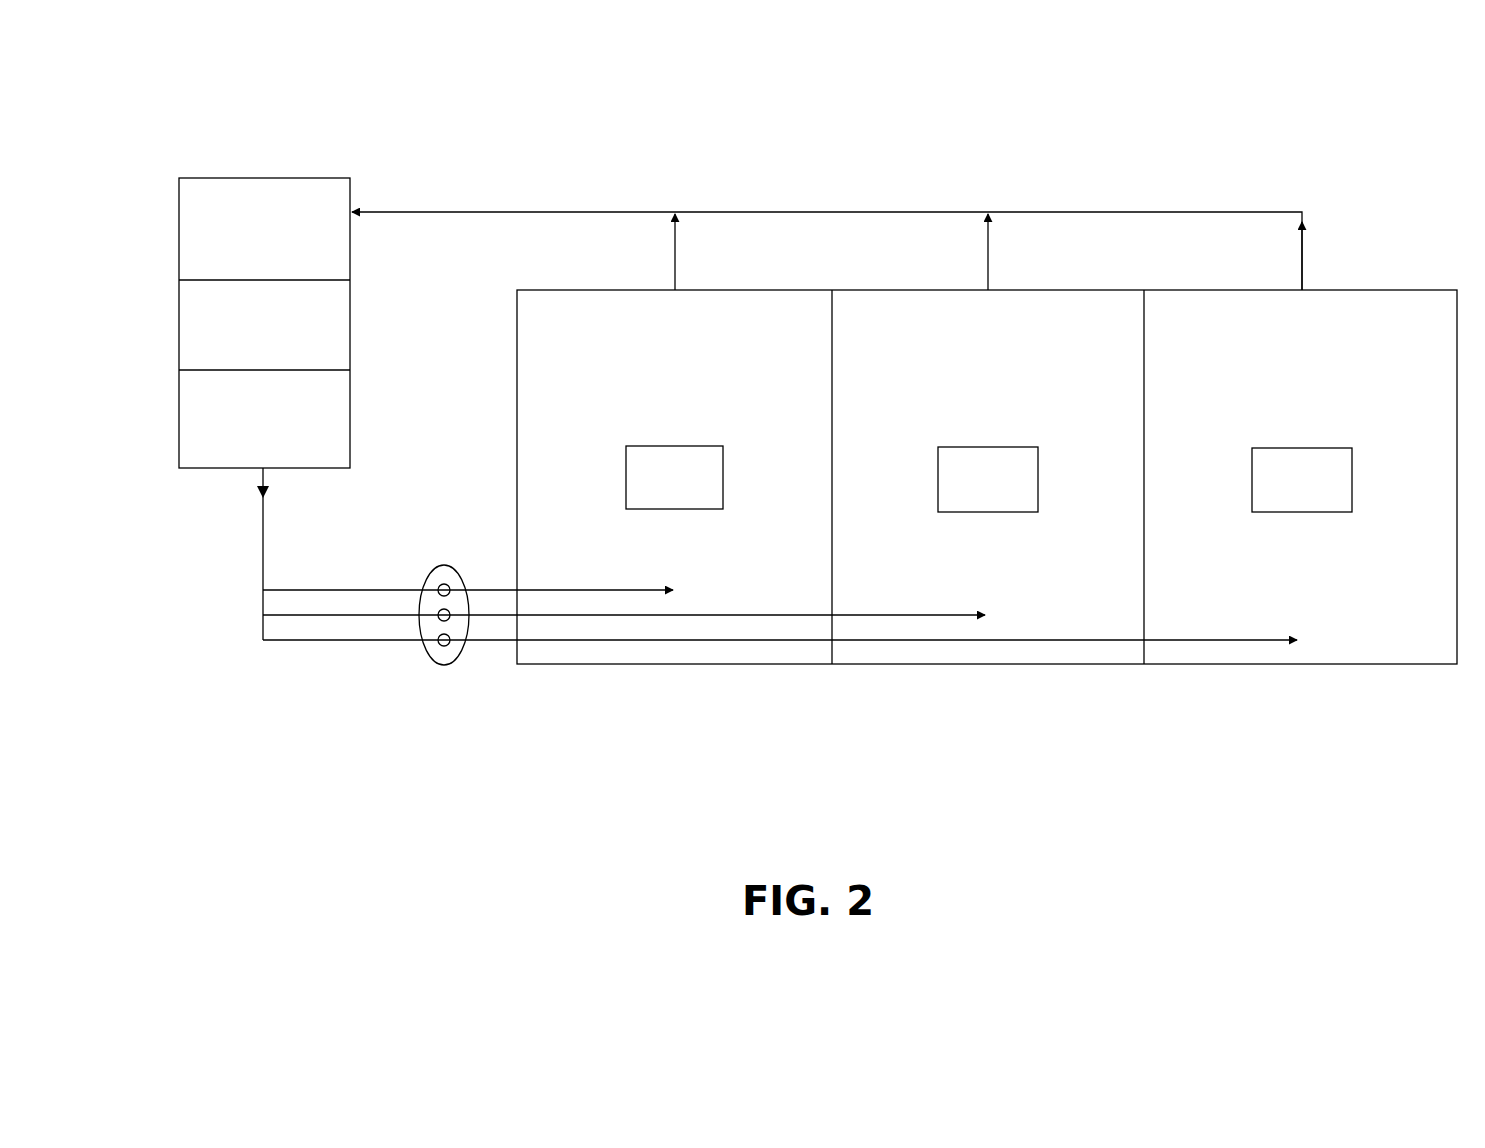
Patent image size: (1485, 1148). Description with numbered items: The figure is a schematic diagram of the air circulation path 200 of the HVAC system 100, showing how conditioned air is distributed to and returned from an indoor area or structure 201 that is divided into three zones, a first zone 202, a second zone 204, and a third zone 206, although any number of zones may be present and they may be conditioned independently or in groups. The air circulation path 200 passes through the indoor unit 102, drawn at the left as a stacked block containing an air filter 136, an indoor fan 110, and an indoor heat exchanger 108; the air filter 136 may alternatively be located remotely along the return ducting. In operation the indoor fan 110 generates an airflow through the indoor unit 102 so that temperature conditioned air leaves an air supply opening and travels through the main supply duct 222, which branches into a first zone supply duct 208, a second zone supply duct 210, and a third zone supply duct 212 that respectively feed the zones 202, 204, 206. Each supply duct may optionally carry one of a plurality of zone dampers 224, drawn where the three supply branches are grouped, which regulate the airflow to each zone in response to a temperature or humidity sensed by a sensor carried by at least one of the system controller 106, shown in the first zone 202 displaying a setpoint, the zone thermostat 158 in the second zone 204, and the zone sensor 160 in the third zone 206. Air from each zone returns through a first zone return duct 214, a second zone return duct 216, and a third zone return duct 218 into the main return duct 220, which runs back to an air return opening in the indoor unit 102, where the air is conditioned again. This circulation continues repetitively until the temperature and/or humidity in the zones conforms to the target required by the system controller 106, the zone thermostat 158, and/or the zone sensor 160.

The HVAC system 100 is at (250, 151).
The indoor unit 102 is at (180, 324).
The system controller 106 is at (672, 510).
The indoor heat exchanger 108 is at (264, 411).
The indoor fan 110 is at (264, 323).
The air filter 136 is at (264, 221).
The zone thermostat 158 is at (988, 512).
The zone sensor 160 is at (1300, 512).
The air circulation path 200 is at (1180, 168).
The indoor area or structure 201 is at (1420, 288).
The first zone 202 is at (650, 381).
The second zone 204 is at (964, 381).
The third zone 206 is at (1278, 381).
The first zone supply duct 208 is at (594, 587).
The second zone supply duct 210 is at (907, 613).
The third zone supply duct 212 is at (1225, 638).
The first zone return duct 214 is at (674, 262).
The second zone return duct 216 is at (990, 266).
The third zone return duct 218 is at (1304, 268).
The main return duct 220 is at (498, 210).
The main supply duct 222 is at (260, 547).
The zone dampers 224 is at (441, 665).